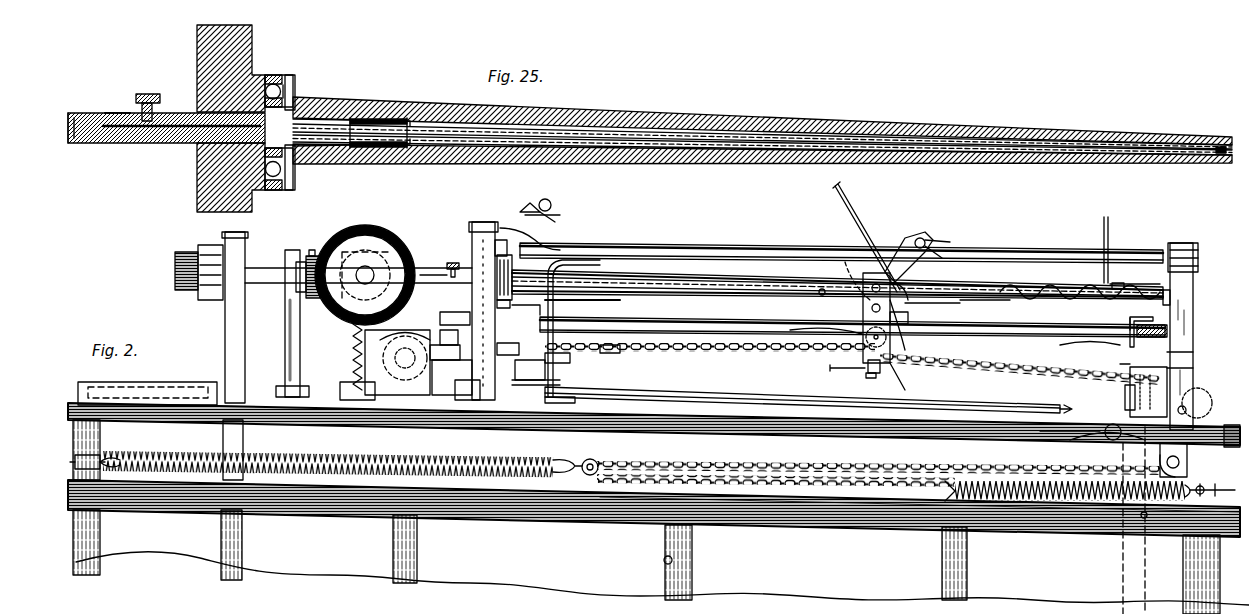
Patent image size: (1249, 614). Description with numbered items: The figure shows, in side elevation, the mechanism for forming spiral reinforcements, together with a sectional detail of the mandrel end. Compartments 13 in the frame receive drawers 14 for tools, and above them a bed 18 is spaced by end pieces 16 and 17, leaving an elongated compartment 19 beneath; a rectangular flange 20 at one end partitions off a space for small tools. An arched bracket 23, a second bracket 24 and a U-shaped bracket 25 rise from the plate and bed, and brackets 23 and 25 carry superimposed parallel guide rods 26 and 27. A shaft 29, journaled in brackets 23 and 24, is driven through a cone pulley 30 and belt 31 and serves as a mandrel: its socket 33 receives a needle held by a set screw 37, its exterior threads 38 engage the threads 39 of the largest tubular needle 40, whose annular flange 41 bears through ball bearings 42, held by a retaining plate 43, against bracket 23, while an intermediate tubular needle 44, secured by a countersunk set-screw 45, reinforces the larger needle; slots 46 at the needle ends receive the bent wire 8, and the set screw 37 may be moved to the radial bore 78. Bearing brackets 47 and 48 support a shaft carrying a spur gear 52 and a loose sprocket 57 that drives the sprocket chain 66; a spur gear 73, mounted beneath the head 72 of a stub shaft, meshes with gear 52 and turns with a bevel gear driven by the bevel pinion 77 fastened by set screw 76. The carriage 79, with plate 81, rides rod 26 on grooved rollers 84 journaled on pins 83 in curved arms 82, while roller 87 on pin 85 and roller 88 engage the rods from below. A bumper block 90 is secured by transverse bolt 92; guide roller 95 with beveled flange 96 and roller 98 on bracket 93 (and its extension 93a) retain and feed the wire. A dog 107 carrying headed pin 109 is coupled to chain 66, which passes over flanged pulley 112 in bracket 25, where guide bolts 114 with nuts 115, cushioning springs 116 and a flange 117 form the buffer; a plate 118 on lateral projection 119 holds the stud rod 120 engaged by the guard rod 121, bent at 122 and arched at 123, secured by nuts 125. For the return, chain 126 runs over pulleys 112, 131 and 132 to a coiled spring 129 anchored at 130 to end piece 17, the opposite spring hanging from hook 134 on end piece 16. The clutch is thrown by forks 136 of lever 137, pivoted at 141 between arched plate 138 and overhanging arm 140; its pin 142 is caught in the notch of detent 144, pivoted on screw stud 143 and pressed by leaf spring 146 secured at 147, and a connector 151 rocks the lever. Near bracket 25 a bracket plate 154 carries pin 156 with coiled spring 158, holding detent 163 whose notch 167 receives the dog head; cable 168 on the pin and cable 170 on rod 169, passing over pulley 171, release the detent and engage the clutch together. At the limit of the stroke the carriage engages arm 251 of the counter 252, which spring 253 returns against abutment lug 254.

In FIG. 2, the wire 8 is at (846, 191).
In FIG. 2, the compartment 13 is at (416, 558).
In FIG. 2, the drawer 14 is at (598, 496).
In FIG. 2, the end piece 16 is at (96, 457).
In FIG. 2, the end piece 17 is at (1214, 450).
In FIG. 2, the bed 18 is at (705, 420).
In FIG. 2, the elongated compartment 19 is at (666, 562).
In FIG. 2, the rectangular flange 20 is at (186, 393).
In FIG. 25, the arched bracket 23 is at (210, 70).
In FIG. 2, the arched bracket 23 is at (476, 292).
In FIG. 2, the second bracket 24 is at (301, 326).
In FIG. 2, the U-shaped bracket 25 is at (1193, 353).
In FIG. 2, the guide rod 26 is at (722, 250).
In FIG. 2, the guide rod 27 is at (690, 326).
In FIG. 25, the shaft 29 is at (90, 143).
In FIG. 2, the shaft 29 is at (430, 268).
In FIG. 2, the cone pulley 30 is at (214, 258).
In FIG. 2, the belt 31 is at (247, 338).
In FIG. 25, the socket 33 is at (205, 146).
In FIG. 25, the set screw 37 is at (150, 89).
In FIG. 2, the set screw 37 is at (452, 263).
In FIG. 25, the threads 38 is at (408, 166).
In FIG. 2, the threads 38 is at (837, 287).
In FIG. 25, the threads 39 is at (382, 166).
In FIG. 25, the tubular needle 40 is at (607, 165).
In FIG. 2, the tubular needle 40 is at (800, 287).
In FIG. 25, the annular flange 41 is at (296, 89).
In FIG. 2, the annular flange 41 is at (512, 267).
In FIG. 25, the ball bearings 42 is at (296, 81).
In FIG. 2, the ball bearings 42 is at (511, 292).
In FIG. 25, the retaining plate 43 is at (280, 78).
In FIG. 2, the retaining plate 43 is at (502, 258).
In FIG. 25, the intermediate tubular needle 44 is at (577, 142).
In FIG. 25, the countersunk set-screw 45 is at (350, 162).
In FIG. 25, the slots 46 is at (1220, 158).
In FIG. 2, the slots 46 is at (1120, 287).
In FIG. 2, the bearing bracket 47 is at (345, 361).
In FIG. 2, the bearing bracket 48 is at (382, 408).
In FIG. 2, the spur gear 52 is at (466, 320).
In FIG. 2, the sprocket 57 is at (426, 408).
In FIG. 2, the sprocket chain 66 is at (800, 349).
In FIG. 2, the head 72 is at (362, 268).
In FIG. 2, the spur gear 73 is at (392, 236).
In FIG. 2, the set screw 76 is at (302, 260).
In FIG. 2, the bevel pinion 77 is at (320, 256).
In FIG. 25, the radial bore 78 is at (140, 110).
In FIG. 2, the radial bore 78 is at (450, 272).
In FIG. 2, the carriage 79 is at (818, 298).
In FIG. 2, the plate 81 is at (835, 372).
In FIG. 2, the laterally curved arms 82 is at (906, 244).
In FIG. 2, the pins 83 is at (926, 240).
In FIG. 2, the grooved rollers 84 is at (945, 240).
In FIG. 2, the pin 85 is at (845, 268).
In FIG. 2, the grooved roller 87 is at (888, 266).
In FIG. 2, the roller 88 is at (860, 340).
In FIG. 2, the bumper block 90 is at (906, 301).
In FIG. 2, the transverse bolt 92 is at (822, 331).
In FIG. 2, the bracket 93 is at (862, 301).
In FIG. 2, the arm extension 93a is at (900, 346).
In FIG. 2, the guide roller 95 is at (1000, 299).
In FIG. 25, the beveled flange 96 is at (353, 118).
In FIG. 2, the beveled flange 96 is at (1008, 290).
In FIG. 2, the roller 98 is at (898, 322).
In FIG. 2, the dog 107 is at (870, 376).
In FIG. 2, the headed pin 109 is at (890, 398).
In FIG. 2, the flanged pulley 112 is at (1200, 390).
In FIG. 2, the guide bolts 114 is at (1080, 342).
In FIG. 2, the nuts 115 is at (1168, 332).
In FIG. 2, the cushioning springs 116 is at (1140, 370).
In FIG. 2, the flange 117 is at (1140, 317).
In FIG. 2, the plate 118 is at (1193, 296).
In FIG. 2, the lateral projection 119 is at (1128, 318).
In FIG. 2, the stud rod 120 is at (1172, 250).
In FIG. 2, the guard rod 121 is at (560, 310).
In FIG. 2, the bend 122 is at (605, 252).
In FIG. 2, the arch 123 is at (1105, 220).
In FIG. 2, the nuts 125 is at (1112, 282).
In FIG. 2, the chain 126 is at (1100, 373).
In FIG. 2, the tensioned coiled spring 129 is at (1050, 500).
In FIG. 2, the connection 130 is at (1200, 540).
In FIG. 2, the pulley 131 is at (1150, 494).
In FIG. 2, the pulley 132 is at (592, 460).
In FIG. 2, the hook 134 is at (142, 458).
In FIG. 2, the forks 136 is at (400, 462).
In FIG. 2, the lever 137 is at (445, 340).
In FIG. 2, the arched plate 138 is at (566, 382).
In FIG. 2, the overhanging arm 140 is at (524, 339).
In FIG. 2, the pivot 141 is at (605, 312).
In FIG. 2, the upstanding pin 142 is at (620, 352).
In FIG. 2, the screw stud 143 is at (566, 346).
In FIG. 2, the detent 144 is at (566, 359).
In FIG. 2, the leaf spring 146 is at (900, 498).
In FIG. 2, the securing point 147 is at (456, 408).
In FIG. 2, the connector 151 is at (582, 401).
In FIG. 2, the bracket plate 154 is at (1125, 396).
In FIG. 2, the pin 156 is at (1158, 465).
In FIG. 2, the coiled spring 158 is at (1106, 432).
In FIG. 2, the detent 163 is at (1193, 369).
In FIG. 2, the semicircular notch 167 is at (1120, 363).
In FIG. 2, the cable 168 is at (1147, 569).
In FIG. 2, the rod 169 is at (890, 378).
In FIG. 2, the cable 170 is at (1058, 411).
In FIG. 2, the pulley 171 is at (1040, 431).
In FIG. 2, the arm 251 is at (560, 234).
In FIG. 2, the counter 252 is at (548, 209).
In FIG. 2, the spring 253 is at (520, 210).
In FIG. 2, the abutment lug 254 is at (560, 221).